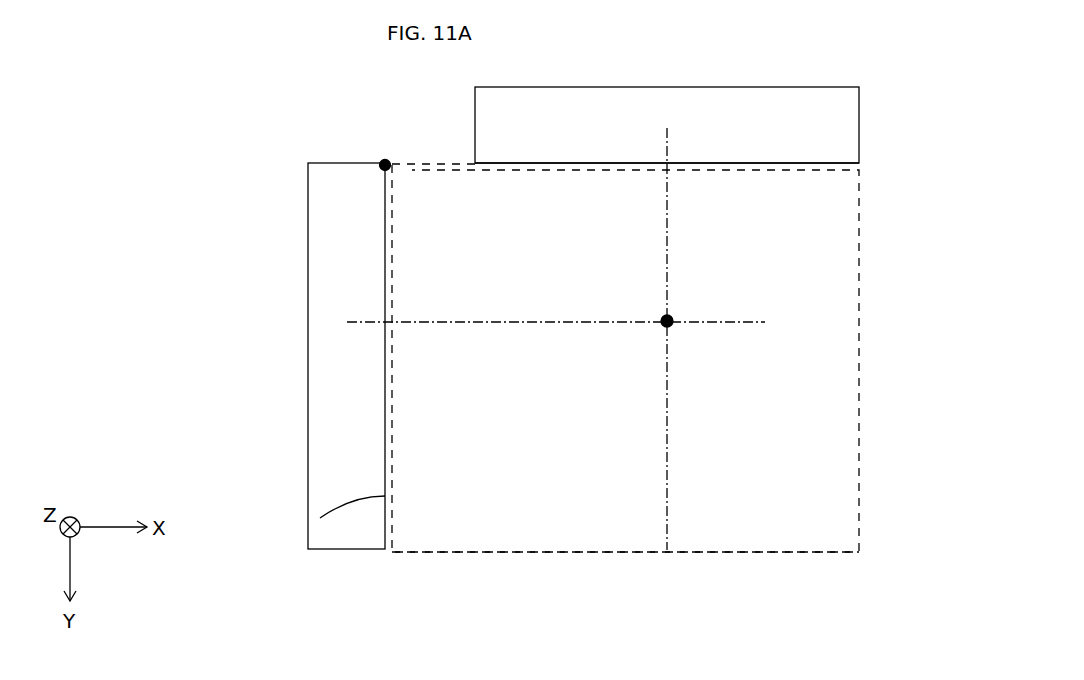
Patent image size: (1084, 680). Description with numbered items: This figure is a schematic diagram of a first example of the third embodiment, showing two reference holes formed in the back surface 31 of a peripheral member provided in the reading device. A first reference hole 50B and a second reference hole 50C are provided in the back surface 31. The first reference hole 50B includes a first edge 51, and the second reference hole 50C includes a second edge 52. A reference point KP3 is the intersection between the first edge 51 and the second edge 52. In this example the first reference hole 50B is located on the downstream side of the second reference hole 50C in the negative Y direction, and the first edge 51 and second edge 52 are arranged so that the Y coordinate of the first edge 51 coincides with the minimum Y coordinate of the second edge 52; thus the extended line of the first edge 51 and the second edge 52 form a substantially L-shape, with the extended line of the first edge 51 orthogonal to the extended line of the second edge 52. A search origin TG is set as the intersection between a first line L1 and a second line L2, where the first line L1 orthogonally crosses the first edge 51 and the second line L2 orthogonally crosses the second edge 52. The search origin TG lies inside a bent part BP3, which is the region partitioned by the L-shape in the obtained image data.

The back surface 31 is at (875, 66).
The first reference hole 50B is at (598, 84).
The second reference hole 50C is at (307, 383).
The first edge 51 is at (820, 157).
The second edge 52 is at (320, 518).
The reference point KP3 is at (390, 170).
The search origin TG is at (672, 326).
The first line L1 is at (671, 525).
The second line L2 is at (742, 321).
The bent part BP3 is at (578, 554).